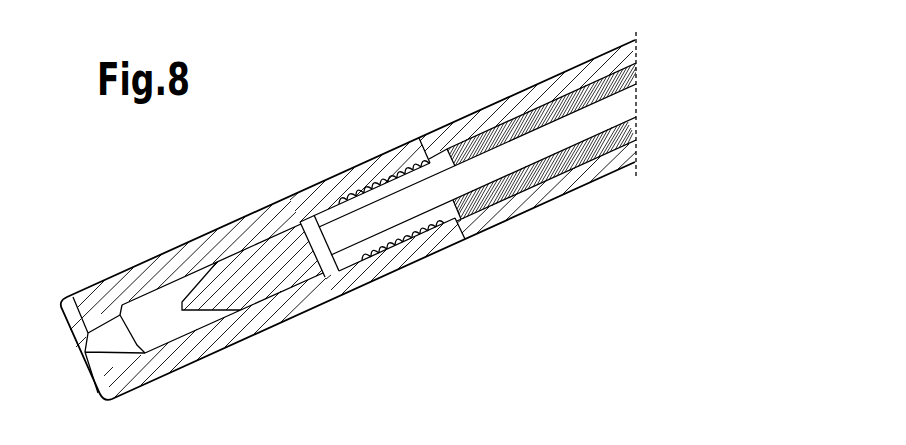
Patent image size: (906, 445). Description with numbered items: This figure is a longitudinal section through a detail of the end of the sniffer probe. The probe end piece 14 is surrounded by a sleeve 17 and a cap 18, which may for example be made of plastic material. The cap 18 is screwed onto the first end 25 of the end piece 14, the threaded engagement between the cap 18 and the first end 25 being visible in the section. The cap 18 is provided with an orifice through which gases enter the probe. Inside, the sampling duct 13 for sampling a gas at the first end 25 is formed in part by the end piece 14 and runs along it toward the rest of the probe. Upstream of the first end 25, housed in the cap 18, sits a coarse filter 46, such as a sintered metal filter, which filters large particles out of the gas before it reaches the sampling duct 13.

The sampling duct 13 is at (576, 124).
The end piece 14 is at (556, 180).
The sleeve 17 is at (507, 113).
The cap 18 is at (131, 282).
The first end of the end piece 25 is at (346, 188).
The coarse filter 46 is at (247, 260).